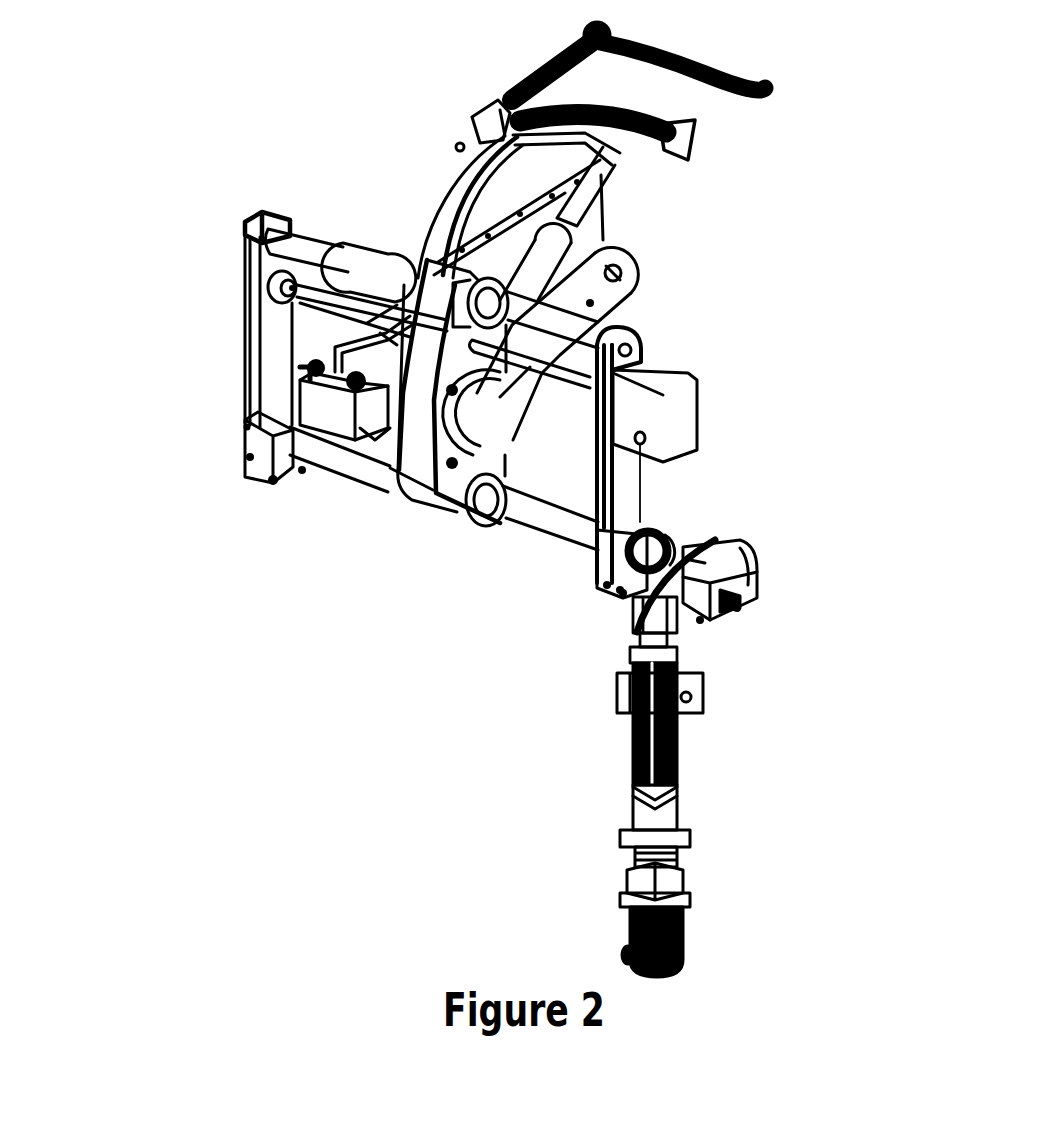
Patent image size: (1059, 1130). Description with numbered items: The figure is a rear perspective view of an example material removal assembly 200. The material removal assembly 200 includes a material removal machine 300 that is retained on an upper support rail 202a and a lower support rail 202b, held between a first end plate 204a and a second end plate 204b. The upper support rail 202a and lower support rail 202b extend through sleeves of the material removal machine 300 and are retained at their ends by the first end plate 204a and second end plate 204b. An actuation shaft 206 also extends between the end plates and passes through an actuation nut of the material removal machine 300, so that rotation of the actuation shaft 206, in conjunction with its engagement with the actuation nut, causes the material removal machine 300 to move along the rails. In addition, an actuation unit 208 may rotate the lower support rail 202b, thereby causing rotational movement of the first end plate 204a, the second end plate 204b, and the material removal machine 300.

The material removal assembly 200 is at (134, 349).
The second end plate 204b is at (255, 218).
The upper support rail 202a is at (306, 228).
The actuation shaft 206 is at (322, 292).
The material removal machine 300 is at (437, 158).
The first end plate 204a is at (646, 350).
The lower support rail 202b is at (540, 526).
The actuation unit 208 is at (788, 668).